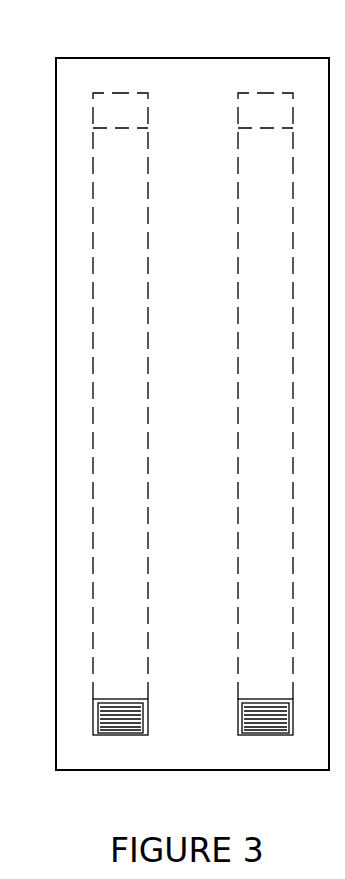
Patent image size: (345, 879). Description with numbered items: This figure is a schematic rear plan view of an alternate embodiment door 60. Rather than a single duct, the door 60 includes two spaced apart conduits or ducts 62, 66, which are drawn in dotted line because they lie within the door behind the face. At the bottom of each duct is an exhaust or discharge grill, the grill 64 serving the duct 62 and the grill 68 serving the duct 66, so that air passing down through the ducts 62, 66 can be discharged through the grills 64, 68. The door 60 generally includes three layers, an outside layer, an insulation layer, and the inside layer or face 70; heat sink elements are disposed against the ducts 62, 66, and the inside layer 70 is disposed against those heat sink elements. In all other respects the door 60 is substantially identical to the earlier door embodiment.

The door 60 is at (133, 43).
The duct 62 is at (93, 187).
The discharge grill 64 is at (100, 737).
The duct 66 is at (238, 187).
The discharge grill 68 is at (243, 737).
The inside layer 70 is at (128, 760).